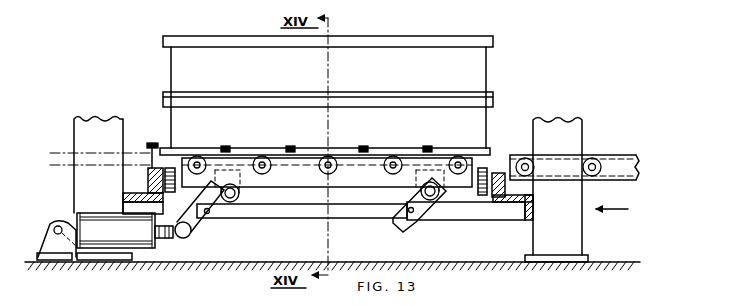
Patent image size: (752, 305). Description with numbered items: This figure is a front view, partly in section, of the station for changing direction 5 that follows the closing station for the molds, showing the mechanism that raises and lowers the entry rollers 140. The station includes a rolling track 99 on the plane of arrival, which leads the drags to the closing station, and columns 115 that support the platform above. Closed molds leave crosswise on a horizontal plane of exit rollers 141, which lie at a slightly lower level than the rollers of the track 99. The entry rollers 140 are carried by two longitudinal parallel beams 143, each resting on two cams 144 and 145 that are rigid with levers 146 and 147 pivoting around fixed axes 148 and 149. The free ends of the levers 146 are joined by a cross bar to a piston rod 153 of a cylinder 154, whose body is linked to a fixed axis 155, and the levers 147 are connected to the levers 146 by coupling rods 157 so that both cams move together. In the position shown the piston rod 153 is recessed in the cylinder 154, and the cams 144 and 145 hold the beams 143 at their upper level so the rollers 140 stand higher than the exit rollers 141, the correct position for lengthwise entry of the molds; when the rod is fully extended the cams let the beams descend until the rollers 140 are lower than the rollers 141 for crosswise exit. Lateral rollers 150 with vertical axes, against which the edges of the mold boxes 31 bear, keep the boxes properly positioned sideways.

The tank 5 is at (157, 55).
The mold box 31 is at (491, 108).
The rolling track 99 is at (586, 158).
The column 115 is at (93, 130).
The entry roller 140 is at (382, 150).
The exit roller 141 is at (170, 193).
The longitudinal beam 143 is at (300, 173).
The cam 144 is at (221, 152).
The cam 145 is at (428, 156).
The lever 146 is at (194, 224).
The lever 147 is at (421, 206).
The fixed axis 148 is at (239, 190).
The fixed axis 149 is at (444, 185).
The lateral roller 150 is at (150, 147).
The piston rod 153 is at (165, 239).
The cylinder 154 is at (104, 252).
The fixed axis 155 is at (53, 240).
The coupling rod 157 is at (343, 214).